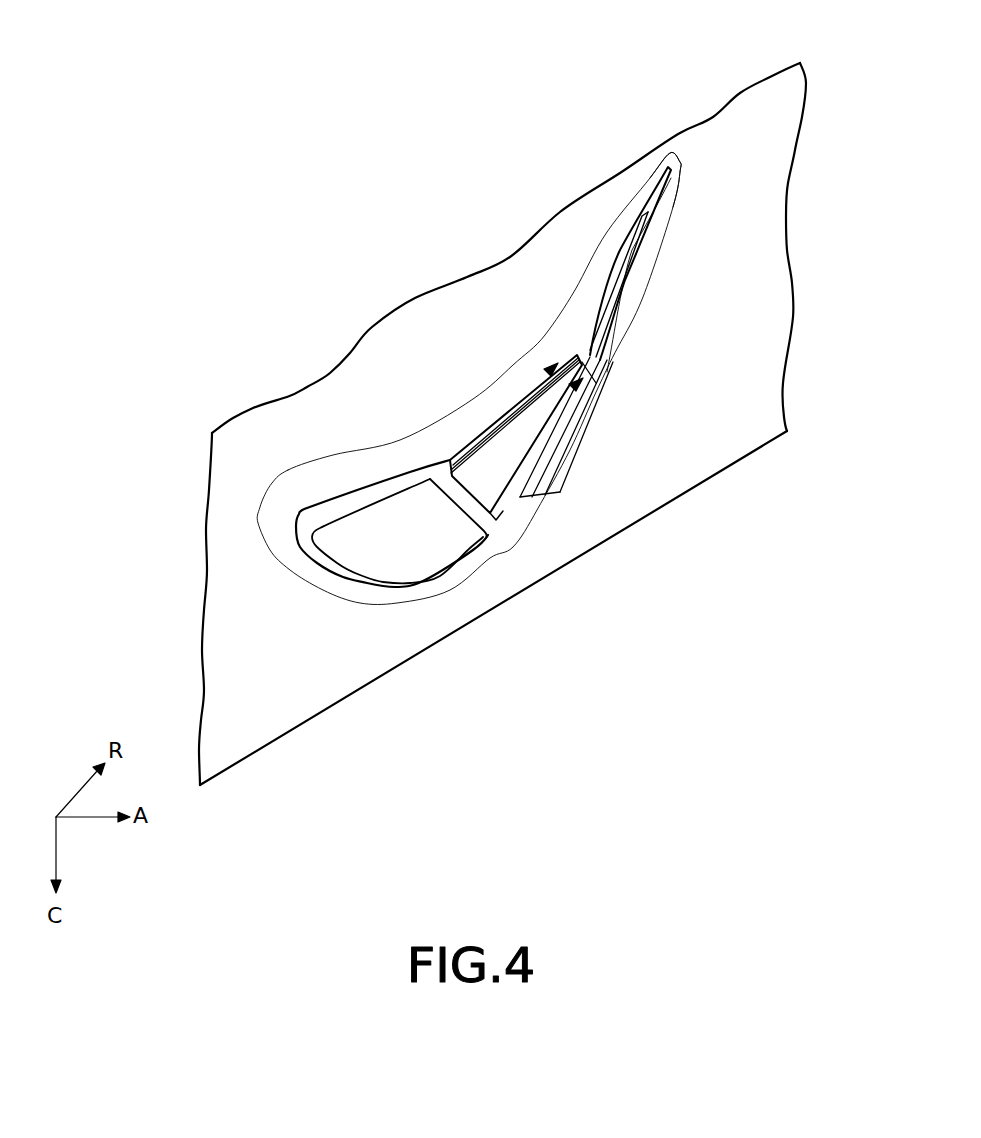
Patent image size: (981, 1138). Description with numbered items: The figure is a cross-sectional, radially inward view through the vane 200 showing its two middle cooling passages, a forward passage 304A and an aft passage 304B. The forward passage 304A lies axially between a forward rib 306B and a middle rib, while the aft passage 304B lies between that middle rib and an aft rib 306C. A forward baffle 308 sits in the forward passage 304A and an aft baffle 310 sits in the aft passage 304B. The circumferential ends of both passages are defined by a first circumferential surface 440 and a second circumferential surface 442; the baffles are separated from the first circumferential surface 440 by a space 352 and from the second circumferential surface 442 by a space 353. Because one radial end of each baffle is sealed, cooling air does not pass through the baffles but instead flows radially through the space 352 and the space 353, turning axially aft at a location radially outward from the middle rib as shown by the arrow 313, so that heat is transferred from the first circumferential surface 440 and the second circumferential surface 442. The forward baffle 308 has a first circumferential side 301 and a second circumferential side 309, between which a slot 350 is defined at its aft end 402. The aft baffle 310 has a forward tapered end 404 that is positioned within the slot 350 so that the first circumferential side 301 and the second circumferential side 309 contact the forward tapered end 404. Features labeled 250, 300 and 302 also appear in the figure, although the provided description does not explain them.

The vane 200 is at (412, 427).
The pocket outline 250 is at (257, 453).
The pocket 300 is at (300, 512).
The first circumferential side 301 is at (472, 453).
The pocket tip 302 is at (678, 172).
The forward passage 304A is at (513, 492).
The aft passage 304B is at (590, 410).
The forward rib 306B is at (478, 530).
The aft rib 306C is at (580, 360).
The forward baffle 308 is at (440, 471).
The second circumferential side 309 is at (523, 482).
The aft baffle 310 is at (598, 360).
The arrow 313 is at (530, 478).
The slot 350 is at (525, 448).
The space 352 is at (563, 343).
The space 353 is at (590, 375).
The aft end 402 is at (530, 447).
The forward tapered end 404 is at (535, 397).
The first circumferential surface 440 is at (542, 386).
The second circumferential surface 442 is at (526, 478).